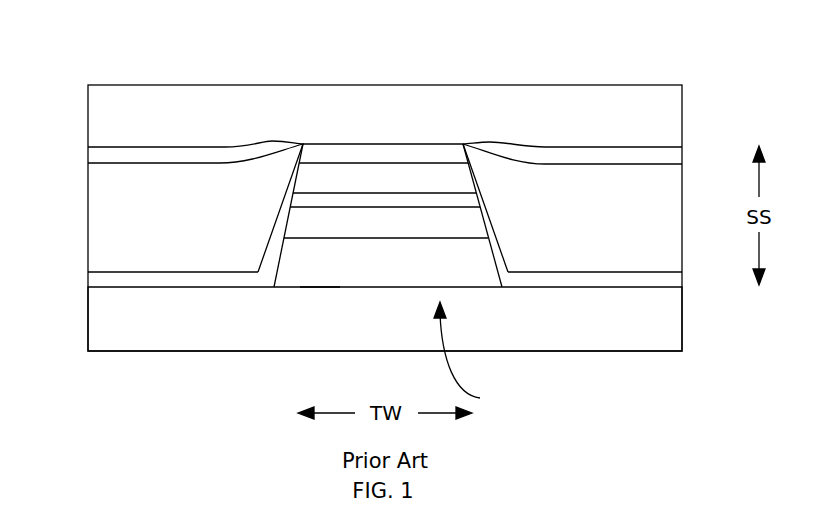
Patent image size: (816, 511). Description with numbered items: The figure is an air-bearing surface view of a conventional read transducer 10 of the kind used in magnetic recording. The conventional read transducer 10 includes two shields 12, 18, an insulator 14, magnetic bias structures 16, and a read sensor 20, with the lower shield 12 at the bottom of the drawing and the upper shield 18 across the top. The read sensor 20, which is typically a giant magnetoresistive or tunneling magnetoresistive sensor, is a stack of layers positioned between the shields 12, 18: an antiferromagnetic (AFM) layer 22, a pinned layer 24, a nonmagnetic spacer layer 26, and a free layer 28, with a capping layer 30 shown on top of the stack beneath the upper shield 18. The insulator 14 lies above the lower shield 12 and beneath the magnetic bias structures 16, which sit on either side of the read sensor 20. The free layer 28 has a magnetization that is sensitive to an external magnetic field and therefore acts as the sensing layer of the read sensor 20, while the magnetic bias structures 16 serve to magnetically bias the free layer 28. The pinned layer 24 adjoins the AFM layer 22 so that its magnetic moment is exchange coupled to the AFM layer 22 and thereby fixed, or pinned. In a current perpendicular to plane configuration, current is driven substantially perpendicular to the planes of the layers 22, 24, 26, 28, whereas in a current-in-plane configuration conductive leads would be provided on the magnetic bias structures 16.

The conventional read transducer 10 is at (397, 32).
The shield 12 is at (682, 320).
The insulator 14 is at (98, 289).
The magnetic bias structures 16 is at (88, 213).
The shield 18 is at (682, 132).
The read sensor 20 is at (474, 355).
The antiferromagnetic (AFM) layer 22 is at (318, 288).
The pinned layer 24 is at (465, 242).
The nonmagnetic spacer layer 26 is at (475, 202).
The free layer 28 is at (297, 180).
The capping layer 30 is at (432, 144).